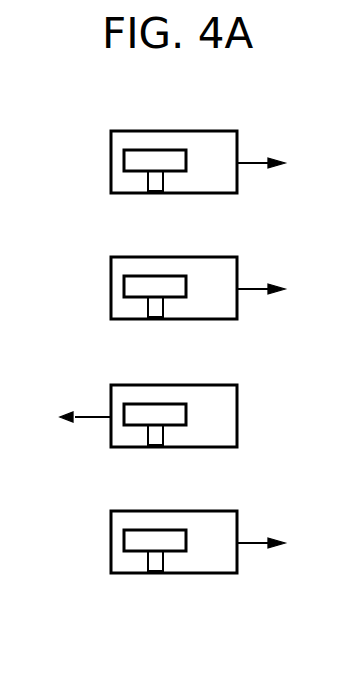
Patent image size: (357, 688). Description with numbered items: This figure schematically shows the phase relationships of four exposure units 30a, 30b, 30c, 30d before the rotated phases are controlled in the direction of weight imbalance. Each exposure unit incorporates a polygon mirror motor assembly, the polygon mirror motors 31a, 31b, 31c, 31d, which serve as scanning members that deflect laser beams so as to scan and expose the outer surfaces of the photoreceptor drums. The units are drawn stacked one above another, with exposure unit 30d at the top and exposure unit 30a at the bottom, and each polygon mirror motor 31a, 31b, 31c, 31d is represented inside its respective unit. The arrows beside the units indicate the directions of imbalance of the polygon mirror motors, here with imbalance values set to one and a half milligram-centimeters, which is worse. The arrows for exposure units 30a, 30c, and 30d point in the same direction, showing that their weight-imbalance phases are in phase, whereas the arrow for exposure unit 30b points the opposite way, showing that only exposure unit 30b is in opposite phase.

The exposure unit 30a is at (121, 561).
The exposure unit 30b is at (120, 433).
The exposure unit 30c is at (121, 307).
The exposure unit 30d is at (121, 181).
The polygon mirror motor 31a is at (161, 539).
The polygon mirror motor 31b is at (161, 413).
The polygon mirror motor 31c is at (161, 285).
The polygon mirror motor 31d is at (161, 159).